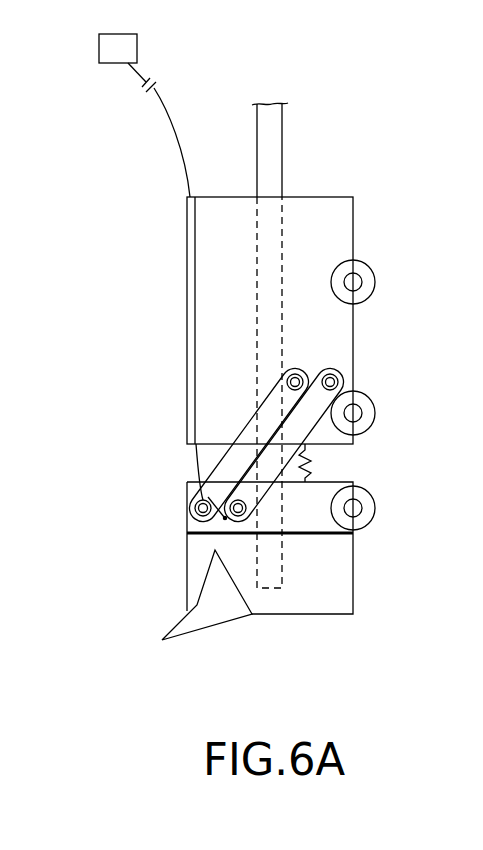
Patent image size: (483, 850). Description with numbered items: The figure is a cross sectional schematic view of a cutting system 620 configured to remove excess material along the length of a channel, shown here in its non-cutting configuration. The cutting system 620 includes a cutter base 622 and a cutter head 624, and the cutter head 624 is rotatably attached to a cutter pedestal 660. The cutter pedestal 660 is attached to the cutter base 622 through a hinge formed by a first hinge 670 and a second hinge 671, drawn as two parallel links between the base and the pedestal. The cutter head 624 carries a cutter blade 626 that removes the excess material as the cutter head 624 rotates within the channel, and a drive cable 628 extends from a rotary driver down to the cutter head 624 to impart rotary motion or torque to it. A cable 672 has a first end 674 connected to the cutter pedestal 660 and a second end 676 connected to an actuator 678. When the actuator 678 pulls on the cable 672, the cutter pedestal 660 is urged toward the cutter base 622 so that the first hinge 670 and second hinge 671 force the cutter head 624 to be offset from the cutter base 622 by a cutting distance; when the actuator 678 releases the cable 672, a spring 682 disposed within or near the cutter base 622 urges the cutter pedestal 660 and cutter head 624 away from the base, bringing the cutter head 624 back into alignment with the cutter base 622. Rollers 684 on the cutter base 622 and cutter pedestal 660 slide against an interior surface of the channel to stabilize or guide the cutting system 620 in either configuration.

The cutting system 620 is at (92, 77).
The cutter base 622 is at (343, 225).
The cutter head 624 is at (335, 581).
The cutter blade 626 is at (210, 610).
The drive cable 628 is at (270, 141).
The cutter pedestal 660 is at (187, 515).
The first hinge 670 is at (243, 457).
The second hinge 671 is at (318, 397).
The cable 672 is at (166, 118).
The first end 674 is at (197, 466).
The second end 676 is at (143, 70).
The actuator 678 is at (137, 43).
The spring 682 is at (310, 458).
The rollers 684 is at (375, 283).